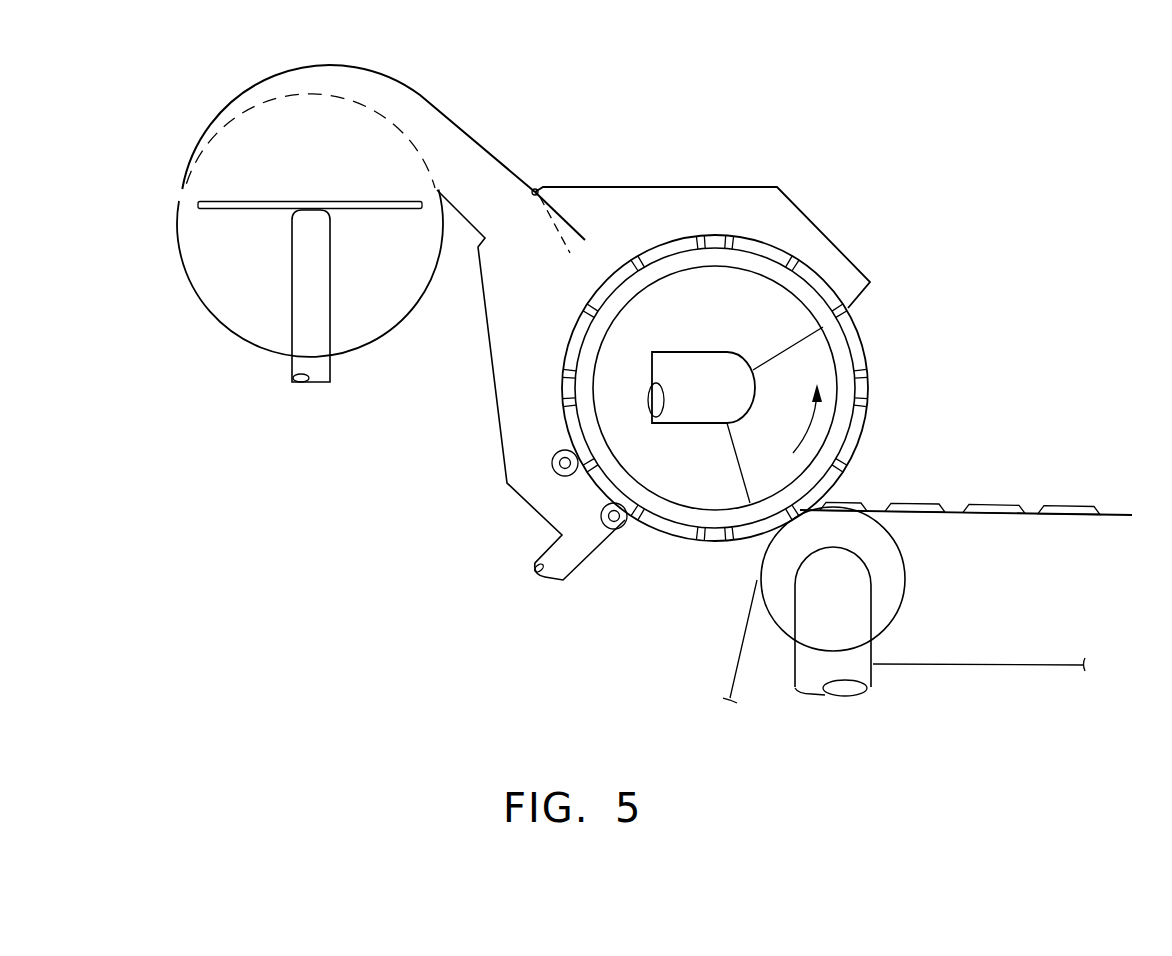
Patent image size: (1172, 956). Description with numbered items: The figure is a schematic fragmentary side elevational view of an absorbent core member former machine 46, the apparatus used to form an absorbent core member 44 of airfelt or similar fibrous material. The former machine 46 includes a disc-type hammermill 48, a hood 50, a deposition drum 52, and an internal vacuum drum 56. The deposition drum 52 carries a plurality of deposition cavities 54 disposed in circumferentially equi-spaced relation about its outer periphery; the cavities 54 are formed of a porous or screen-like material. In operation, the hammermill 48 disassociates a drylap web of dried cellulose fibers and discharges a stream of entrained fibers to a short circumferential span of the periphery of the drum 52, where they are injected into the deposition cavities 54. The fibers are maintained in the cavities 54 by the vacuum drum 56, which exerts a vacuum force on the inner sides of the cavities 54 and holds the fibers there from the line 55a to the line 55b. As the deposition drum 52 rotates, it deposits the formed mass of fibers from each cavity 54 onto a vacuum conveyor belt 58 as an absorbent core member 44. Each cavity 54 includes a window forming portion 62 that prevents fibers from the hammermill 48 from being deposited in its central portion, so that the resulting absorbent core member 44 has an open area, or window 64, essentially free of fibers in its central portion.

The absorbent core member 44 is at (965, 503).
The absorbent core member former machine 46 is at (298, 400).
The disc-type hammermill 48 is at (223, 292).
The hood 50 is at (688, 188).
The deposition drum 52 is at (853, 315).
The deposition cavities 54 is at (865, 428).
The line 55a is at (778, 333).
The line 55b is at (698, 463).
The internal vacuum drum 56 is at (719, 314).
The vacuum conveyor belt 58 is at (952, 515).
The window forming portion 62 is at (868, 355).
The window 64 is at (997, 503).